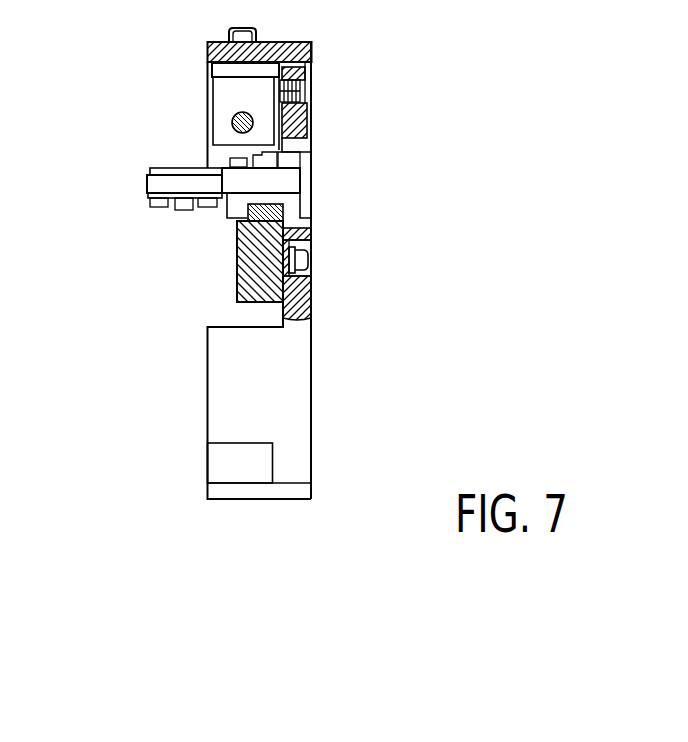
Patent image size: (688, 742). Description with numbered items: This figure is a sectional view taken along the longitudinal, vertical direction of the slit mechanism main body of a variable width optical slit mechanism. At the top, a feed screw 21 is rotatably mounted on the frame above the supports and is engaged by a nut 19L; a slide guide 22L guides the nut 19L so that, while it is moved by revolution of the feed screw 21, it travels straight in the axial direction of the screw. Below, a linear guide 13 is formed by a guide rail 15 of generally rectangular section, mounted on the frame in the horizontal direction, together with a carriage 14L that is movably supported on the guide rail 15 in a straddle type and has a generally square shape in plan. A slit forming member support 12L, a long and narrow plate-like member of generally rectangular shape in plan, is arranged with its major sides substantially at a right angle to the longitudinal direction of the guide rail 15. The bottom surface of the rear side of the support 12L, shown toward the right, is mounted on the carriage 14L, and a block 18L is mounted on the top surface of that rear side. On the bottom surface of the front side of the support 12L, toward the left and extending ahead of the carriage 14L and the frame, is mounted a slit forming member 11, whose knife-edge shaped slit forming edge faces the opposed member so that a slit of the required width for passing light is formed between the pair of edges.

The nut 19L is at (218, 92).
The feed screw 21 is at (231, 120).
The slide guide 22L is at (274, 66).
The block 18L is at (285, 152).
The carriage 14L is at (300, 194).
The slit forming member support 12L is at (147, 183).
The slit forming member 11 is at (147, 195).
The guide rail 15 is at (283, 212).
The linear guide 13 is at (223, 227).